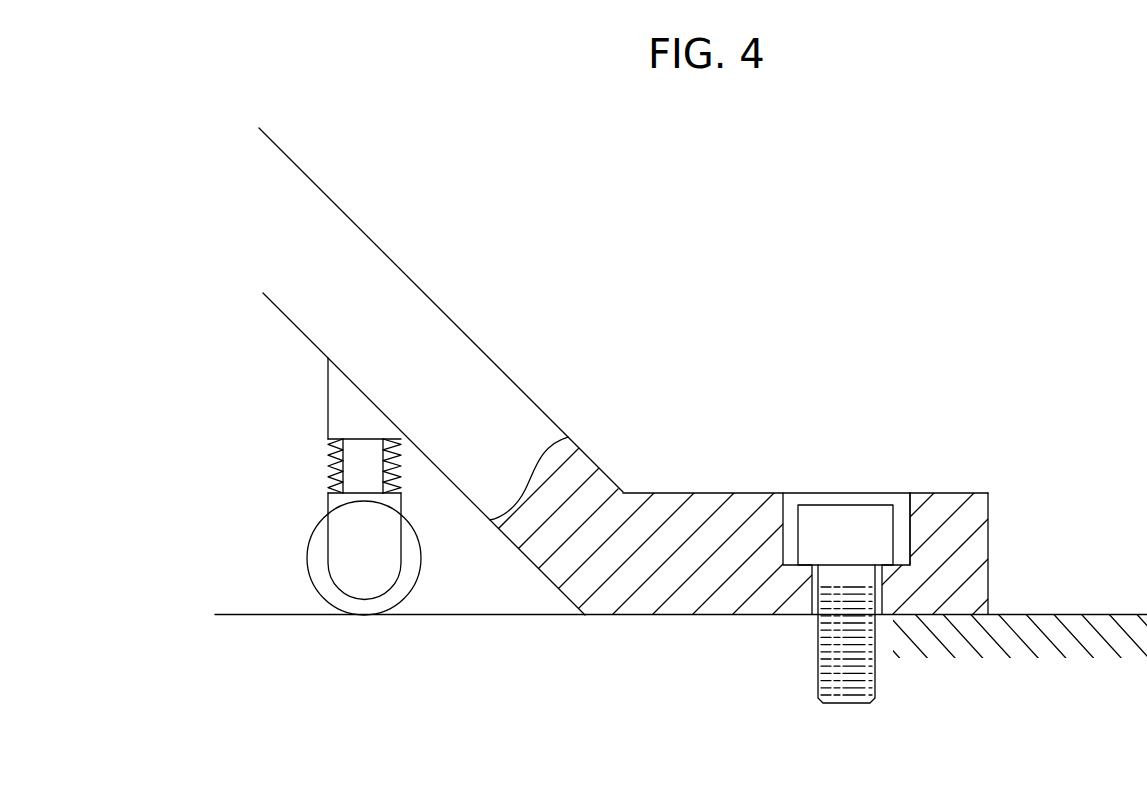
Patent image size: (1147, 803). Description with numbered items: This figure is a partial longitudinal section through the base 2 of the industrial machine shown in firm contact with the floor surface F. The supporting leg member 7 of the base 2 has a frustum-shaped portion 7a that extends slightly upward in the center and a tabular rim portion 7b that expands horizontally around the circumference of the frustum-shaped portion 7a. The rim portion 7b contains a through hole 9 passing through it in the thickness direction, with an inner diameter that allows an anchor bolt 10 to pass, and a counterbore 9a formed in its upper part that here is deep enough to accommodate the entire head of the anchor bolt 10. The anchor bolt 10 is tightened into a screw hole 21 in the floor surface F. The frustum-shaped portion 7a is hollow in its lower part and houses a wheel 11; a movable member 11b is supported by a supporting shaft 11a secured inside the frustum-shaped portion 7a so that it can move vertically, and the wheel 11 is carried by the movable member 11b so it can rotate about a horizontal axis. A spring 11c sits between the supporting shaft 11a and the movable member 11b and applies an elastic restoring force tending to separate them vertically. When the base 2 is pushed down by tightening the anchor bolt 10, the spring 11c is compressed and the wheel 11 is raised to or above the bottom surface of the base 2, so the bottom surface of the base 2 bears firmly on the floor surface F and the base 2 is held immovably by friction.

The base 2 is at (717, 263).
The supporting leg member 7 is at (568, 380).
The frustum-shaped portion 7a is at (390, 258).
The rim portion 7b is at (699, 493).
The through hole 9 is at (891, 556).
The counterbore 9a is at (910, 510).
The anchor bolt 10 is at (824, 505).
The wheel 11 is at (284, 547).
The supporting shaft 11a is at (328, 385).
The movable member 11b is at (312, 585).
The spring 11c is at (328, 465).
The screw hole 21 is at (818, 650).
The floor surface F is at (1110, 614).